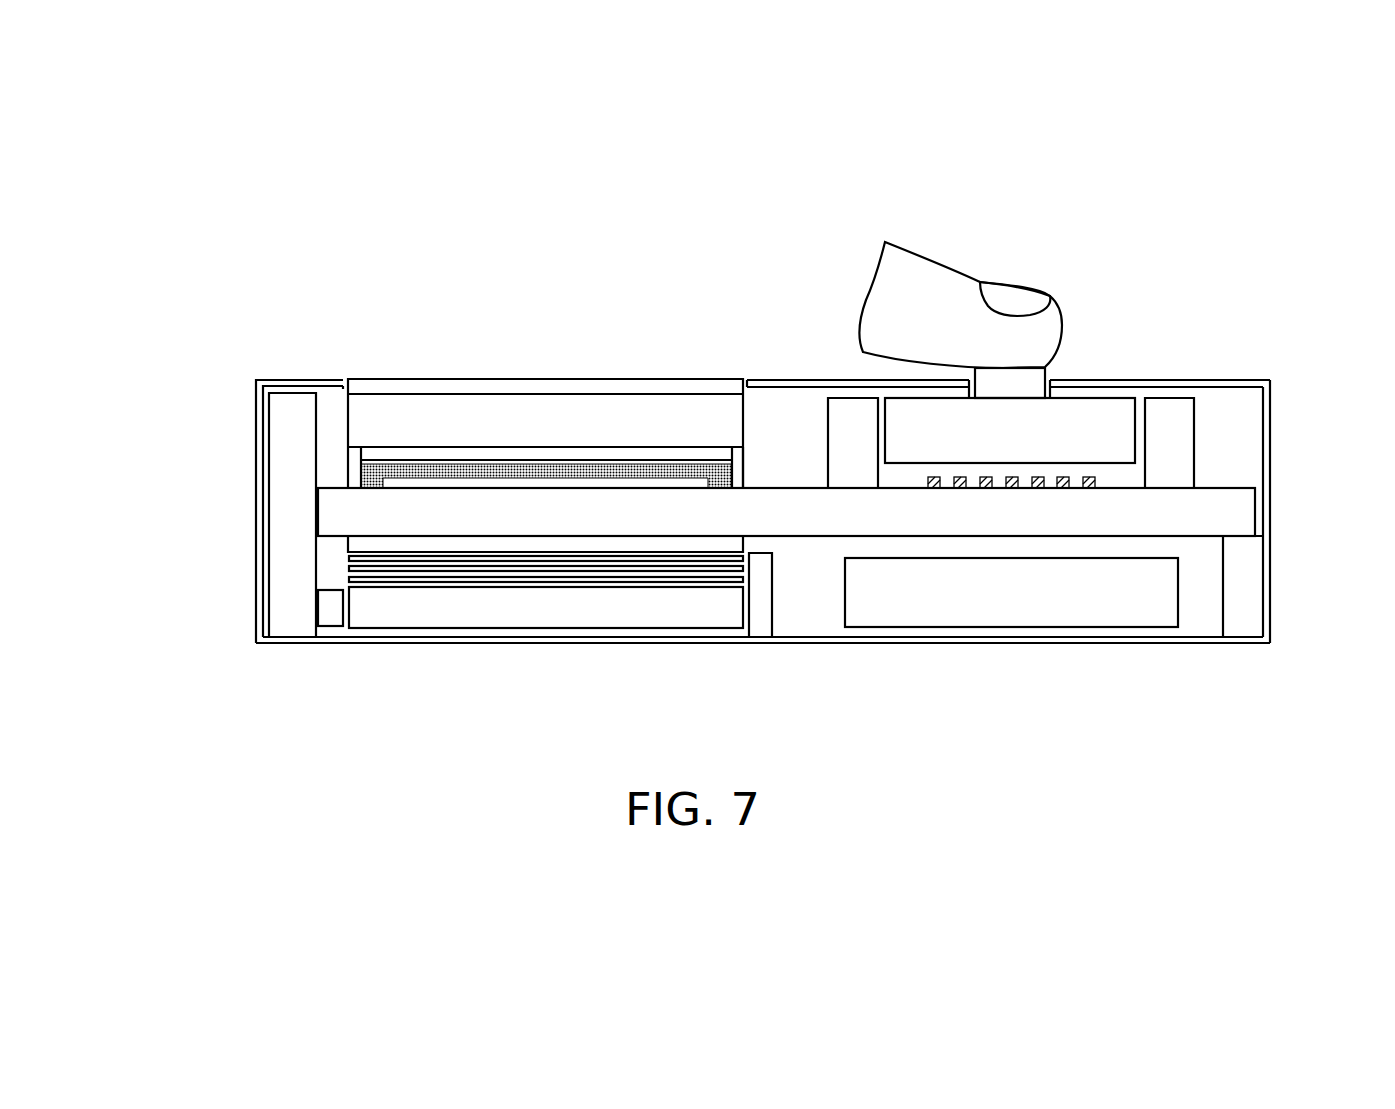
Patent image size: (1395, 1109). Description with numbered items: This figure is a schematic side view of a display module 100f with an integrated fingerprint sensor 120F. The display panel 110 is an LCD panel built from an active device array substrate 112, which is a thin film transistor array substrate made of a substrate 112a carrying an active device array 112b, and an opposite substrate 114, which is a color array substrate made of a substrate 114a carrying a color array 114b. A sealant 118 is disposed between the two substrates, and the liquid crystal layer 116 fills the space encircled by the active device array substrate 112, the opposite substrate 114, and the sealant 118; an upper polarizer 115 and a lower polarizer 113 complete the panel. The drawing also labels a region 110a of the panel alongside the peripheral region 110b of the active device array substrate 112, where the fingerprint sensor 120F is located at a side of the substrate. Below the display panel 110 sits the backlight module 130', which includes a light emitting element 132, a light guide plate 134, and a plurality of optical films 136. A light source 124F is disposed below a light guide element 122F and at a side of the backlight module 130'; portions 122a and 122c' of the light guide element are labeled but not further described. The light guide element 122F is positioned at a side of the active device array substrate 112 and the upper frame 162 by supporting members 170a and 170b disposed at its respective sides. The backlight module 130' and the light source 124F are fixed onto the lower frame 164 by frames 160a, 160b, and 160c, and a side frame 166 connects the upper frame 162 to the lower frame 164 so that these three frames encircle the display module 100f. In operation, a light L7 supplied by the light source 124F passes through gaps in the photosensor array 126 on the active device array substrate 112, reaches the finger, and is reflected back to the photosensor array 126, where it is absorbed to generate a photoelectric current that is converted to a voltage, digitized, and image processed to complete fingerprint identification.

The display module 100f is at (1195, 732).
The display panel 110 is at (90, 427).
The display region 110a is at (743, 349).
The peripheral region 110b is at (1145, 216).
The active device array substrate 112 is at (148, 508).
The substrate 112a is at (330, 521).
The active device array 112b is at (363, 477).
The lower polarizer 113 is at (357, 543).
The opposite substrate 114 is at (145, 397).
The substrate 114a is at (358, 425).
The color array 114b is at (361, 457).
The upper polarizer 115 is at (370, 388).
The liquid crystal layer 116 is at (362, 469).
The sealant 118 is at (741, 476).
The fingerprint sensor 120F is at (1236, 174).
The light guide element 122F is at (1213, 288).
The light transmitting element 122a is at (1040, 377).
The cavity 122c' is at (1055, 374).
The light source 124F is at (980, 607).
The photosensor array 126 is at (933, 500).
The backlight module 130' is at (517, 650).
The light emitting element 132 is at (331, 617).
The light guide plate 134 is at (437, 613).
The optical films 136 is at (345, 555).
The frame 160a is at (283, 617).
The frame 160b is at (762, 627).
The frame 160c is at (1245, 628).
The upper frame 162 is at (1243, 385).
The lower frame 164 is at (1125, 640).
The side frame 166 is at (1268, 573).
The supporting member 170a is at (1183, 462).
The supporting member 170b is at (848, 410).
The light L7 is at (971, 450).